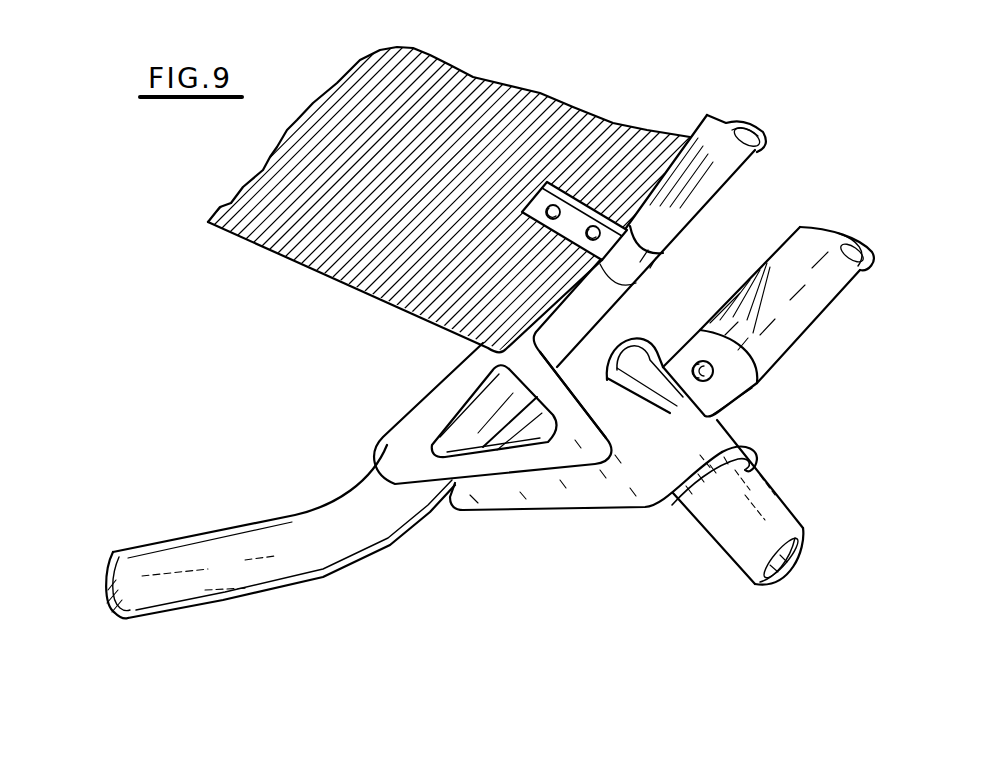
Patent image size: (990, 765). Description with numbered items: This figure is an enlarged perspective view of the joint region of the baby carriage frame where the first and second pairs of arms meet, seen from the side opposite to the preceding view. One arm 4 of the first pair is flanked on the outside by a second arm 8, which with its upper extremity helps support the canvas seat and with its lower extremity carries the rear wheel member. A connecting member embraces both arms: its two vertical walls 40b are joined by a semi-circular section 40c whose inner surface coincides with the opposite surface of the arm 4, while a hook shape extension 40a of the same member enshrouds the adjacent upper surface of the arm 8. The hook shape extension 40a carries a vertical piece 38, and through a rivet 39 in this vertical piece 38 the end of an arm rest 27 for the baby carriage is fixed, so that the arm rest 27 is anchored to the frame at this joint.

The arm 4 is at (150, 563).
The second arm 8 is at (787, 537).
The arm rest 27 is at (870, 267).
The vertical piece 38 is at (757, 386).
The rivet 39 is at (697, 361).
The hook shape extension 40a is at (748, 445).
The vertical walls 40b is at (618, 492).
The semi-circular section 40c is at (380, 444).